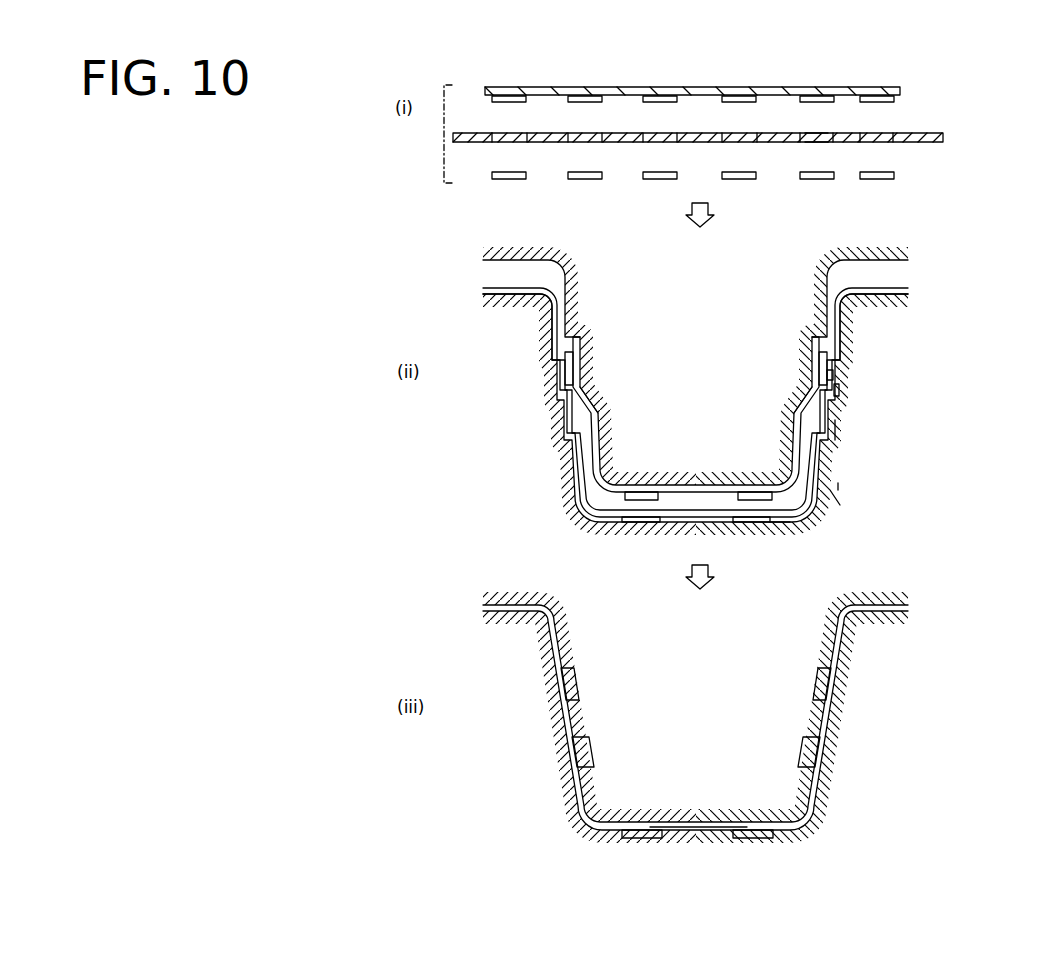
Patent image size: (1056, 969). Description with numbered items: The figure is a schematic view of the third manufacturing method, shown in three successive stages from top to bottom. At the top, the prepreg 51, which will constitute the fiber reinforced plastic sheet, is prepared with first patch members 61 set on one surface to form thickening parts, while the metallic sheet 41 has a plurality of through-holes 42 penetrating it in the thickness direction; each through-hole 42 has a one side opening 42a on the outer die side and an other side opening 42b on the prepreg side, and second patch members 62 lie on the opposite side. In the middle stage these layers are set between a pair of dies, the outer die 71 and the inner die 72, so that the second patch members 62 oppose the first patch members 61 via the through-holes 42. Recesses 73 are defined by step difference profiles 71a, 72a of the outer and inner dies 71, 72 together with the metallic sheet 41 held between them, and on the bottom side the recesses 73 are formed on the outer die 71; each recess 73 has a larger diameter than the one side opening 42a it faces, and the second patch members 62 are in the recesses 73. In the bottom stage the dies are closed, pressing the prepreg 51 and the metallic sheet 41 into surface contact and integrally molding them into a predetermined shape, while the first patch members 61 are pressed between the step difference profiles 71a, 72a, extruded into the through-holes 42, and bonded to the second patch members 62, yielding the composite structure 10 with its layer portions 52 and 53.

The composite structure 10 is at (444, 134).
The metallic sheet 41 is at (944, 137).
The through-hole 42 is at (887, 145).
The one side opening 42a is at (818, 141).
The other side opening 42b is at (818, 131).
The prepreg 51 is at (906, 85).
The resin layer portion 52 is at (824, 694).
The resin layer portion 53 is at (835, 711).
The first patch member 61 is at (900, 99).
The second patch member 62 is at (899, 175).
The outer die 71 is at (920, 300).
The step difference profile of outer die 71a is at (840, 495).
The inner die 72 is at (920, 252).
The step difference profile of inner die 72a is at (792, 393).
The recess 73 is at (838, 428).